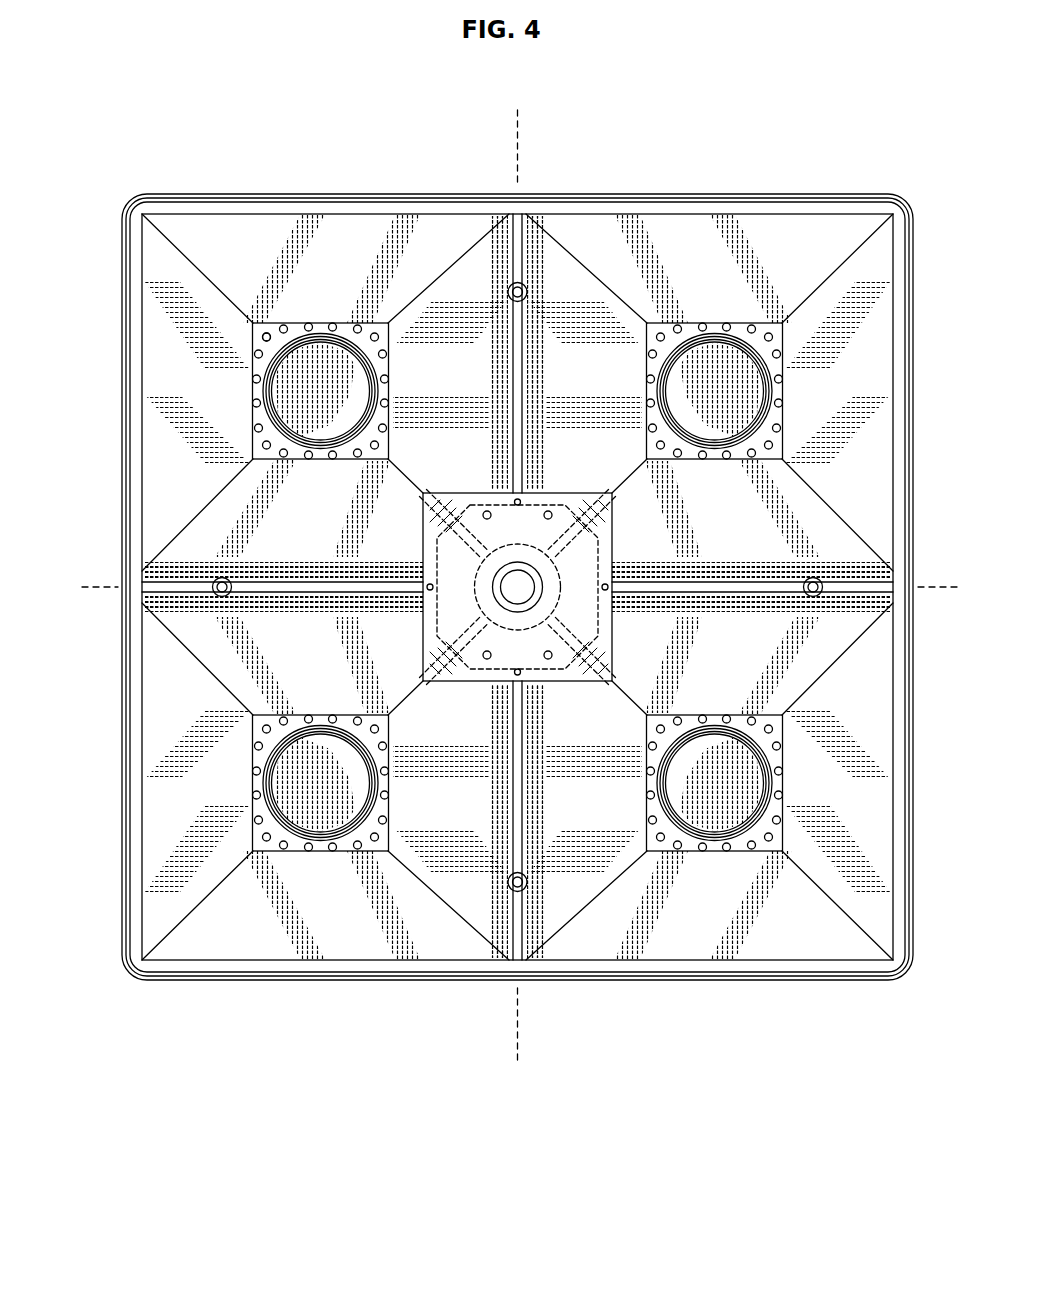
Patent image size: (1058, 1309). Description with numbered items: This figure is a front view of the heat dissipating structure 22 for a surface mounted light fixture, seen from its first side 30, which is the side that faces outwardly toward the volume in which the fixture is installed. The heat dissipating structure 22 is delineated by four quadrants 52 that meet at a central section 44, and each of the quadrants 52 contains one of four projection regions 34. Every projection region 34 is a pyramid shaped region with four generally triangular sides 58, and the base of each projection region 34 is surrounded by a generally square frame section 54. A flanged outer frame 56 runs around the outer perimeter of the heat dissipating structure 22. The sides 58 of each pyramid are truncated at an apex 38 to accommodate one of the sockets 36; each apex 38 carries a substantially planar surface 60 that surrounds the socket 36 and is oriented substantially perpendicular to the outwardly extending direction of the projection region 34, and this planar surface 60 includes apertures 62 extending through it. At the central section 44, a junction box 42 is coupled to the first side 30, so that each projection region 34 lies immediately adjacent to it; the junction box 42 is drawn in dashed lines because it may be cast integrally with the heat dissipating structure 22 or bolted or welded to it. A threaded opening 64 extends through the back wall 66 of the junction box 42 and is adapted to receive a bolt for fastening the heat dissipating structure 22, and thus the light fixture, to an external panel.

The heat dissipating structure 22 is at (508, 1156).
The first side 30 is at (237, 110).
The projection region 34 is at (157, 367).
The socket 36 is at (313, 370).
The apex 38 is at (375, 320).
The junction box 42 is at (478, 492).
The central section 44 is at (555, 446).
The quadrant 52 is at (341, 88).
The frame section 54 is at (362, 213).
The flanged outer frame 56 is at (122, 603).
The side 58 is at (329, 266).
The planar surface 60 is at (260, 350).
The aperture 62 is at (263, 354).
The threaded opening 64 is at (524, 570).
The back wall 66 is at (580, 563).